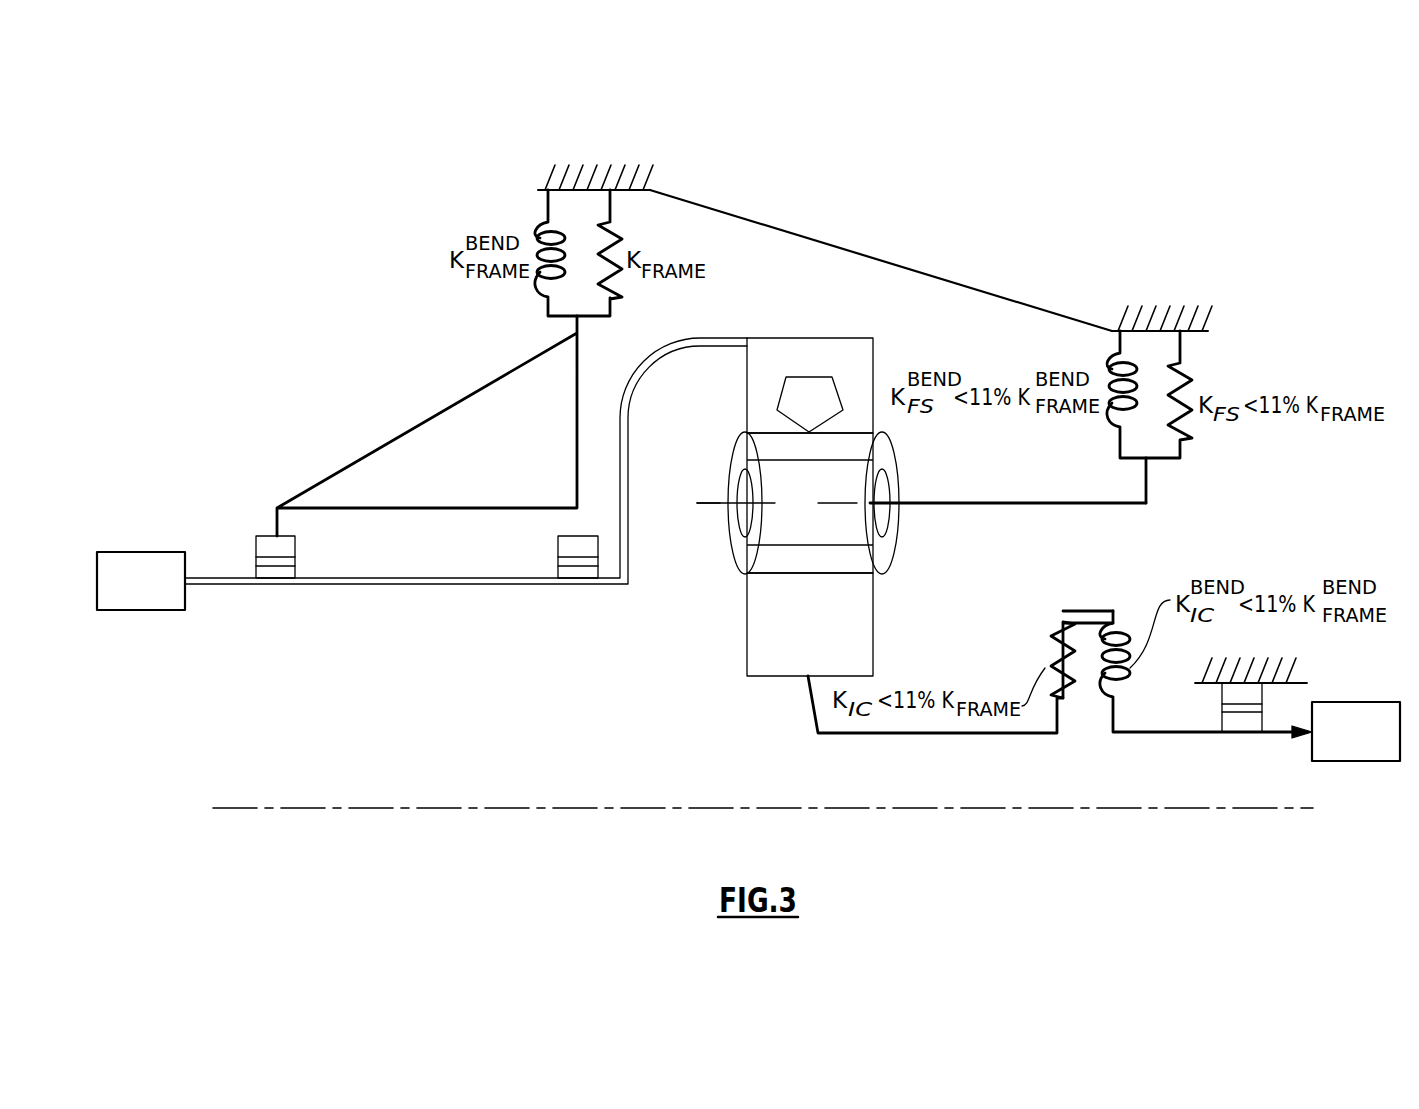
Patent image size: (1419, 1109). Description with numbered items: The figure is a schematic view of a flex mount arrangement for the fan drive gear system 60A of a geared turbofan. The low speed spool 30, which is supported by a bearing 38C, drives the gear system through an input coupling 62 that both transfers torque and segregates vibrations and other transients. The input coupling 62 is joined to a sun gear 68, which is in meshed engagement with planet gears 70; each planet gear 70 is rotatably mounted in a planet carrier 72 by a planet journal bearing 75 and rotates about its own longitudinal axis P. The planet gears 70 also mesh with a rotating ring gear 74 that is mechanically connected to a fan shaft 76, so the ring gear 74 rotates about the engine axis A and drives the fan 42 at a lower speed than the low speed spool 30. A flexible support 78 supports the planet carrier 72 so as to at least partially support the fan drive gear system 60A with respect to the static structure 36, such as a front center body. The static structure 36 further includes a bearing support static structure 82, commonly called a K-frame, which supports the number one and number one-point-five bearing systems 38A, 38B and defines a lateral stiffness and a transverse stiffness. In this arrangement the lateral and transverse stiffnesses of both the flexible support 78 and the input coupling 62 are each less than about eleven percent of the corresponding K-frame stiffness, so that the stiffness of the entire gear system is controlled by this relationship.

The low speed spool 30 is at (1371, 744).
The static structure 36 is at (1001, 279).
The number 1 bearing system 38A is at (262, 546).
The number 1.5 bearing system 38B is at (562, 548).
The bearing 38C is at (1253, 695).
The fan 42 is at (156, 594).
The fan drive gear system 60A is at (632, 705).
The input coupling 62 is at (903, 737).
The sun gear 68 is at (825, 640).
The planet gear 70 is at (883, 455).
The planet carrier 72 is at (905, 475).
The ring gear 74 is at (858, 370).
The planet journal bearing 75 is at (815, 515).
The fan shaft 76 is at (520, 586).
The flexible support 78 is at (1120, 504).
The bearing support static structure 82 is at (442, 398).
The longitudinal axis P is at (720, 500).
The engine axis A is at (568, 808).